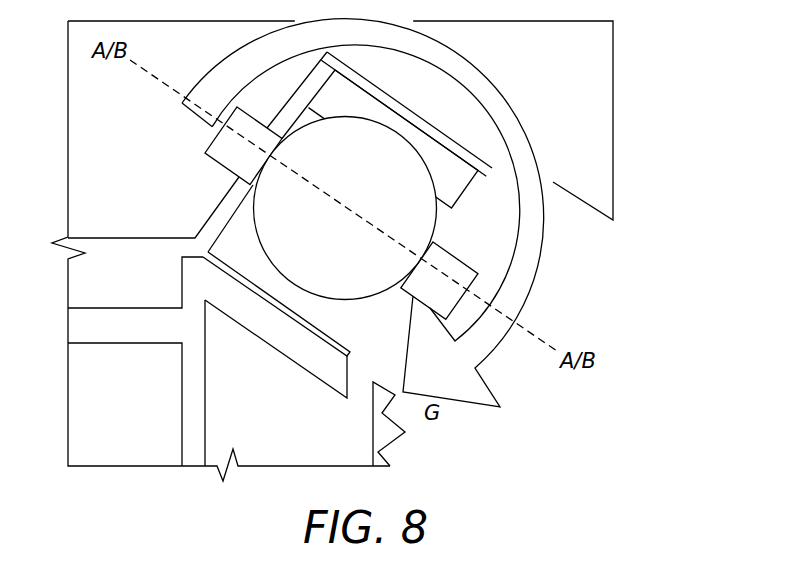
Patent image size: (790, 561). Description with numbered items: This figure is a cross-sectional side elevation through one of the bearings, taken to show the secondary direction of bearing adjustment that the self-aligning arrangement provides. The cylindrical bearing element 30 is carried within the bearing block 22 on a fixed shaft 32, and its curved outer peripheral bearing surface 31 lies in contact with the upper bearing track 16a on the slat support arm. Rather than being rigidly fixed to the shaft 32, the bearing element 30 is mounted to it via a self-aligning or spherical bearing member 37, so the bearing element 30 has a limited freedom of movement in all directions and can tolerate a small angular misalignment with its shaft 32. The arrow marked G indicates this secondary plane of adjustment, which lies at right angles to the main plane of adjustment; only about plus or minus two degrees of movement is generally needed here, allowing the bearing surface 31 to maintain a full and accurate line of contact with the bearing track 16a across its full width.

The bearing block 22 is at (603, 48).
The upper bearing track 16a is at (237, 283).
The cylindrical bearing element 30 is at (441, 157).
The curved outer peripheral bearing surface 31 is at (403, 111).
The shaft 32 is at (225, 153).
The self-aligning or spherical bearing member 37 is at (345, 208).